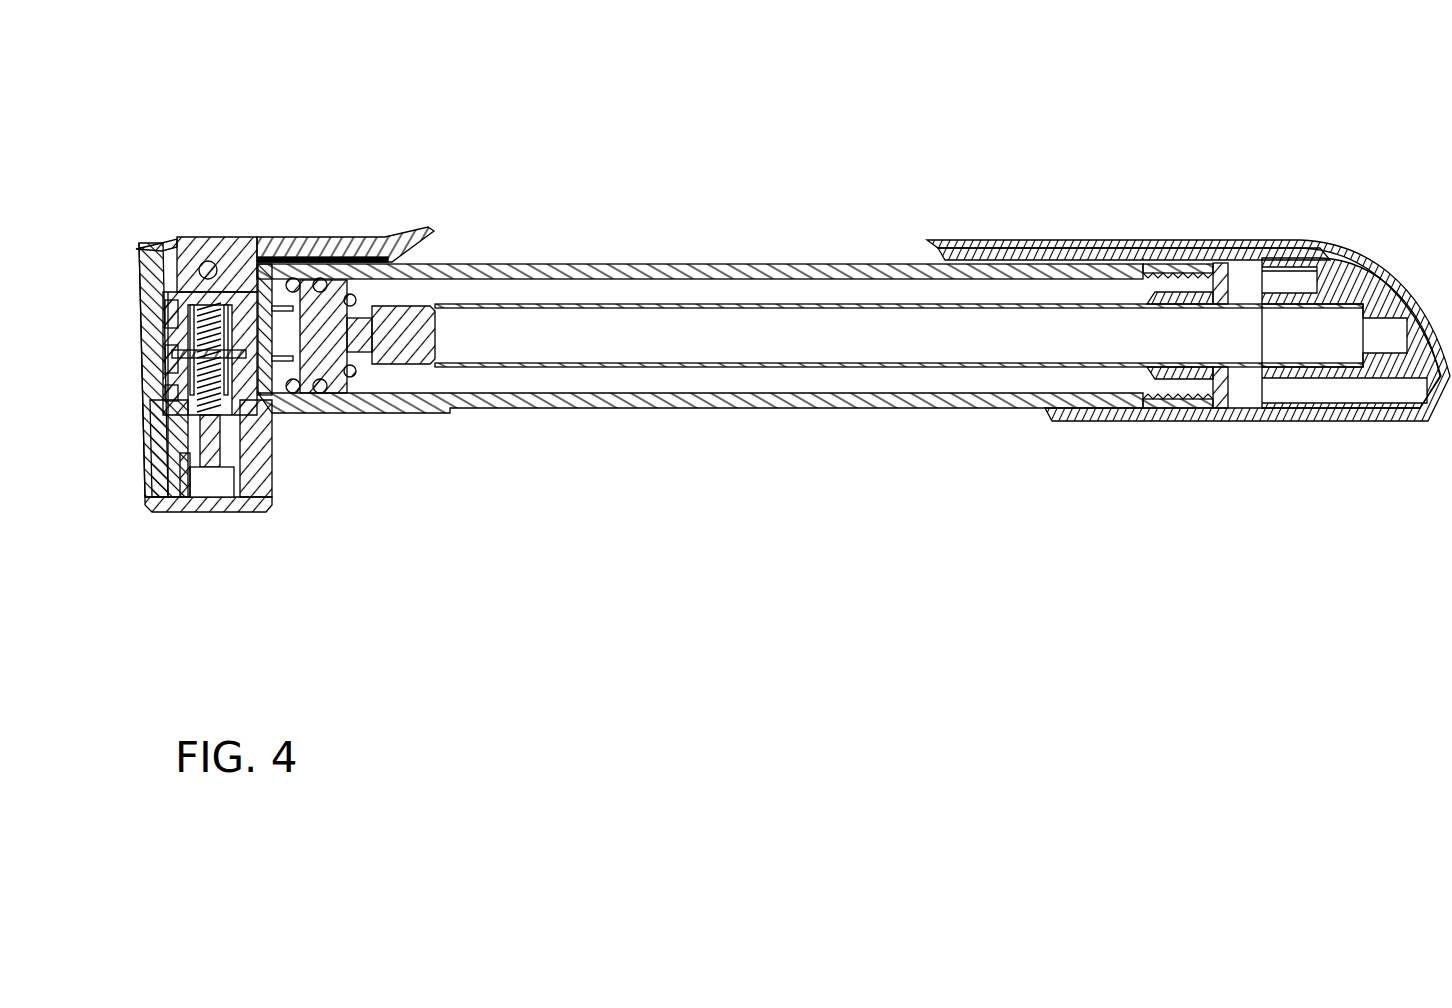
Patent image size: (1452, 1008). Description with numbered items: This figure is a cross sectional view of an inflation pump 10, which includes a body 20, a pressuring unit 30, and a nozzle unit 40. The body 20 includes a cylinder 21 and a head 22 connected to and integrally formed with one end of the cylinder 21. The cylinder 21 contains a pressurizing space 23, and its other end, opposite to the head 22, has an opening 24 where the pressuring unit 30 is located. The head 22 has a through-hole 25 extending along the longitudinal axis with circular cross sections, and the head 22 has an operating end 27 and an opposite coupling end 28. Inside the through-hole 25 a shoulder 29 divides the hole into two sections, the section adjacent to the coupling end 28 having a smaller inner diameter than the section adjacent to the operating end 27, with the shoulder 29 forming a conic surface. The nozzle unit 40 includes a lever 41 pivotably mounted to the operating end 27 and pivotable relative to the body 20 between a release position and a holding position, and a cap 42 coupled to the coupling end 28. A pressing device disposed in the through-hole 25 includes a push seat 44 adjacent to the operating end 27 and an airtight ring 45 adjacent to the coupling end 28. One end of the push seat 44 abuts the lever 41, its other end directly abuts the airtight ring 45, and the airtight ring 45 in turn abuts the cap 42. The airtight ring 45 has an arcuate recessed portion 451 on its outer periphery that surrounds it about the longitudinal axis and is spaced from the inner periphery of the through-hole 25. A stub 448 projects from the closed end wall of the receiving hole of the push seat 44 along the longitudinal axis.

The inflation pump 10 is at (848, 160).
The body 20 is at (717, 247).
The cylinder 21 is at (753, 397).
The head 22 is at (150, 380).
The pressurizing space 23 is at (833, 386).
The opening 24 is at (1232, 412).
The through-hole 25 is at (139, 322).
The operating end 27 is at (157, 240).
The coupling end 28 is at (253, 508).
The shoulder 29 is at (163, 405).
The pressuring unit 30 is at (1182, 228).
The nozzle unit 40 is at (327, 222).
The lever 41 is at (381, 240).
The cap 42 is at (276, 490).
The push seat 44 is at (252, 262).
The airtight ring 45 is at (189, 468).
The stub 448 is at (207, 261).
The recessed portion 451 is at (171, 487).